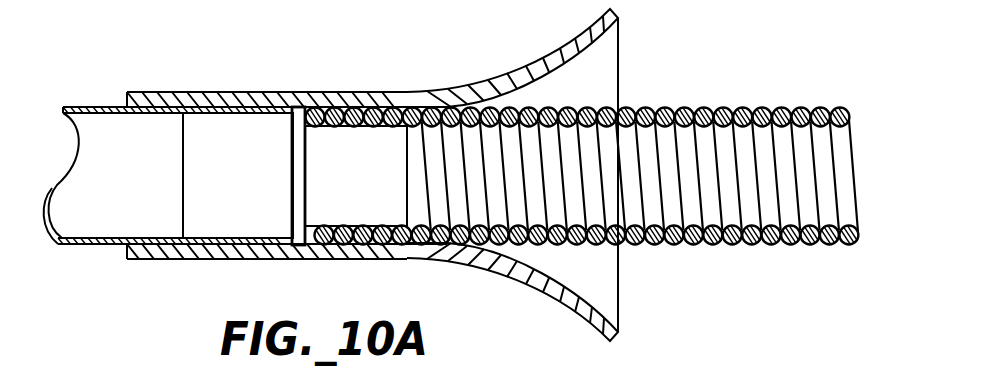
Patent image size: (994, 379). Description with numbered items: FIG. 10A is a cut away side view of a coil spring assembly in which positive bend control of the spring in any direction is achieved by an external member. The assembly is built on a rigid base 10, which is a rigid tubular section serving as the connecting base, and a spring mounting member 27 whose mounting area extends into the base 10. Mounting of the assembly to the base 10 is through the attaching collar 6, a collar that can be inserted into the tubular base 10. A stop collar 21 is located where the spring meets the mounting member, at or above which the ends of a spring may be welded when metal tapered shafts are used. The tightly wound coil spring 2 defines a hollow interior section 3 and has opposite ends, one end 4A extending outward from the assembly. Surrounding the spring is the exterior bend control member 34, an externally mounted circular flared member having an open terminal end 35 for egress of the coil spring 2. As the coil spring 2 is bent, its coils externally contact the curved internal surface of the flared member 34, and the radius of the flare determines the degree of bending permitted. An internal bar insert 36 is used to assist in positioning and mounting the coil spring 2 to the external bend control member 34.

The coil spring 2 is at (802, 132).
The hollow interior section 3 is at (680, 147).
The end of coil spring 4A is at (855, 157).
The attaching collar 6 is at (240, 92).
The rigid base 10 is at (103, 107).
The stop collar 21 is at (307, 155).
The spring mounting member 27 is at (238, 215).
The exterior bend control member 34 is at (530, 63).
The open terminal end 35 is at (619, 80).
The internal bar insert 36 is at (412, 158).